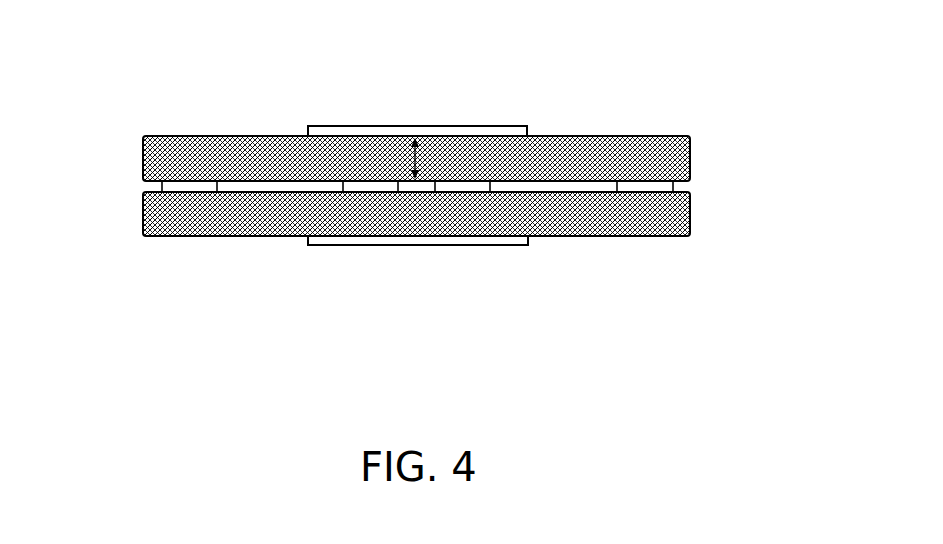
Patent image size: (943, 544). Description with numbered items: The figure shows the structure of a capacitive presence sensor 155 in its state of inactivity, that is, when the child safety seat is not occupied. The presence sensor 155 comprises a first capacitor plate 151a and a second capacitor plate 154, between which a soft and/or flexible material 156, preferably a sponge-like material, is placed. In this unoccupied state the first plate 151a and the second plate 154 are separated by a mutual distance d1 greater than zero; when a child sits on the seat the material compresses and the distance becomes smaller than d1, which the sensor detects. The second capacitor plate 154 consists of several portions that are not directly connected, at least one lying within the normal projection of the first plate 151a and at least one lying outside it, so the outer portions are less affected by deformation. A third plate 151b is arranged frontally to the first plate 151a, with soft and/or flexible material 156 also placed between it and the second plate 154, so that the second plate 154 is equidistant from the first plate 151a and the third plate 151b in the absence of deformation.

The presence sensor 155 is at (106, 155).
The soft and/or flexible material 156 is at (677, 222).
The first capacitor plate 151a is at (470, 127).
The third plate 151b is at (473, 247).
The second capacitor plate 154 is at (186, 189).
The mutual distance d1 is at (385, 126).